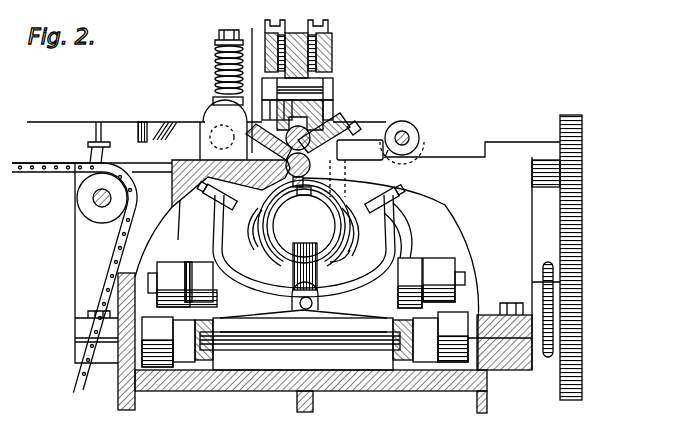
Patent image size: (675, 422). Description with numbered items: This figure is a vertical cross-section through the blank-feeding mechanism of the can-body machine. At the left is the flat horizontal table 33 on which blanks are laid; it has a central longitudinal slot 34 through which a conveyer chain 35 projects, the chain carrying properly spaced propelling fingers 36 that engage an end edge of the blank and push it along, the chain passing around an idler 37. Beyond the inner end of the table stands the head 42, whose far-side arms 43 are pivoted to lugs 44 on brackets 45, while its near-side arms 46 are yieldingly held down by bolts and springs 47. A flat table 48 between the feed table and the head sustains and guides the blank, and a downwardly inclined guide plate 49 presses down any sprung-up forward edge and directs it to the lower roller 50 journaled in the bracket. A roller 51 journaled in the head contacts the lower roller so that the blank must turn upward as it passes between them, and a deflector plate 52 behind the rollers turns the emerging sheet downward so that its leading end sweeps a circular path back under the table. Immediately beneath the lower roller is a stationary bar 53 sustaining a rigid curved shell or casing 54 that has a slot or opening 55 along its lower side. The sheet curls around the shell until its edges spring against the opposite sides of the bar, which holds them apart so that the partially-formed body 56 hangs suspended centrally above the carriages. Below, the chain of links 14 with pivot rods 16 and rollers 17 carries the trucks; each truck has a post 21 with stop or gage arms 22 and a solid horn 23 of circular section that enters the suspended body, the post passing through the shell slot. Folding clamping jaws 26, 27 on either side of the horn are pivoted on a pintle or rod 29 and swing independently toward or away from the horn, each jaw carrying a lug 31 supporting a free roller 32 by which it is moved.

The links 14 is at (393, 355).
The rods 16 is at (303, 337).
The rollers 17 is at (305, 339).
The post 21 is at (298, 265).
The stop or gage arms 22 is at (257, 222).
The solid horn 23 is at (304, 226).
The folding clamping jaw 26 is at (205, 220).
The folding clamping jaw 27 is at (397, 208).
The pintle or rod 29 is at (309, 307).
The lug 31 is at (303, 283).
The free roller 32 is at (172, 268).
The flat horizontal table 33 is at (47, 162).
The central longitudinal slot 34 is at (127, 140).
The conveyer chain 35 is at (53, 172).
The propelling fingers 36 is at (96, 140).
The idler 37 is at (88, 210).
The head 42 is at (375, 125).
The arms 43 is at (403, 121).
The lugs 44 is at (413, 125).
The brackets 45 is at (530, 170).
The arms 46 is at (210, 118).
The bolts and springs 47 is at (217, 72).
The flat table 48 is at (195, 170).
The downwardly inclined guide plate 49 is at (242, 81).
The roller 50 is at (340, 177).
The roller 51 is at (335, 128).
The deflector plate 52 is at (340, 142).
The stationary bar 53 is at (391, 269).
The curved shell or casing 54 is at (348, 229).
The slot or opening 55 is at (325, 252).
The partially-formed cylinder or body 56 is at (265, 248).